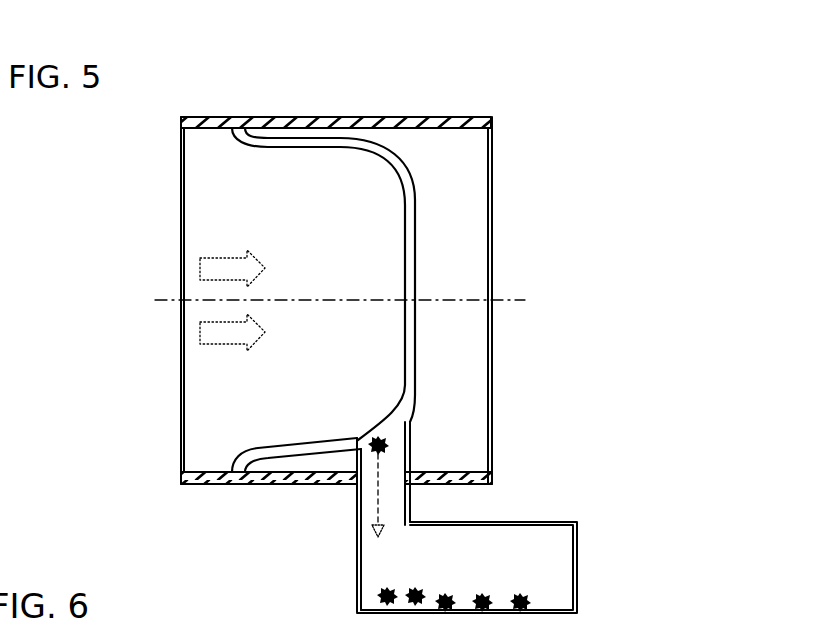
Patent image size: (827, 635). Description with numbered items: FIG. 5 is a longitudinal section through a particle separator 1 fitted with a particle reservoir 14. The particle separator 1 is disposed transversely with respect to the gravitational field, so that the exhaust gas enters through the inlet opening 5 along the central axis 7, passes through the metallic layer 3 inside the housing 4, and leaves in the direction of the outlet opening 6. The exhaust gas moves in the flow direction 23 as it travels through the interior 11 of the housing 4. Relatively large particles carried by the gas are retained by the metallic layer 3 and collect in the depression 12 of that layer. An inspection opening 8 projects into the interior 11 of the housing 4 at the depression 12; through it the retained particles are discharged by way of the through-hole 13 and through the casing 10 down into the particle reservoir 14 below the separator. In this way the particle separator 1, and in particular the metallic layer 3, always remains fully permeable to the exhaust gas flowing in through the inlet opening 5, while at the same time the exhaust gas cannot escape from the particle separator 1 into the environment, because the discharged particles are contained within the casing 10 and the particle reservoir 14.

The particle separator 1 is at (376, 267).
The metallic layer 3 is at (342, 150).
The housing 4 is at (425, 117).
The inlet opening 5 is at (180, 136).
The outlet opening 6 is at (492, 198).
The central axis 7 is at (158, 300).
The inspection opening 8 is at (358, 522).
The casing 10 is at (370, 492).
The interior 11 is at (202, 153).
The depression 12 is at (405, 385).
The through-hole 13 is at (393, 425).
The particle reservoir 14 is at (550, 548).
The flow direction 23 is at (220, 345).